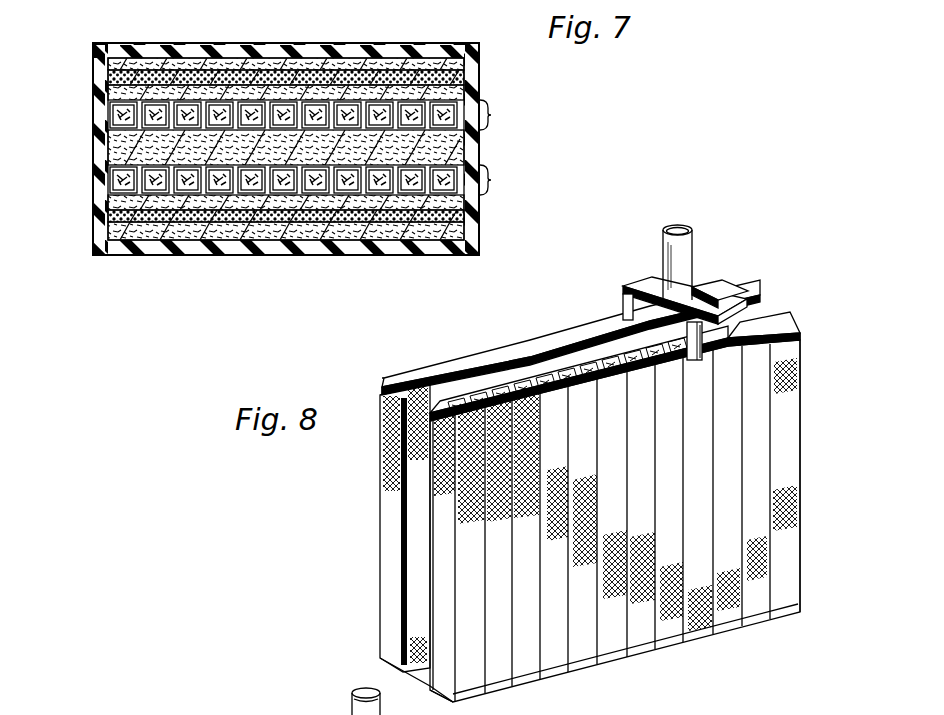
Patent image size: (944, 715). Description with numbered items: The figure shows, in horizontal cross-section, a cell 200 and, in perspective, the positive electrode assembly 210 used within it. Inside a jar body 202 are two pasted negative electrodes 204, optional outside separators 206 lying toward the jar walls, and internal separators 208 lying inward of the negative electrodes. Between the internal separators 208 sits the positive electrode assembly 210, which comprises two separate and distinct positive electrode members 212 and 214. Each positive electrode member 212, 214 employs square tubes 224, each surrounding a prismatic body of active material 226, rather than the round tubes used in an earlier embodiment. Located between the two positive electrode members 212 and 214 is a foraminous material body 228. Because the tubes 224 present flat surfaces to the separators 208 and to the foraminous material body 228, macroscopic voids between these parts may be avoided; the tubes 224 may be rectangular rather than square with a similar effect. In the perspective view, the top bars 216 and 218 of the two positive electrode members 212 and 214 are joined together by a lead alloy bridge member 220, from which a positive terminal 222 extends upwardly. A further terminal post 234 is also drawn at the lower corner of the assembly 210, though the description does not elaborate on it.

In FIG. 7, the cell 200 is at (517, 89).
In FIG. 7, the jar body 202 is at (414, 250).
In FIG. 7, the pasted negative electrodes 204 is at (109, 75).
In FIG. 7, the outside separators 206 is at (155, 62).
In FIG. 7, the internal separators 208 is at (108, 92).
In FIG. 7, the positive electrode member 212 is at (491, 113).
In FIG. 8, the positive electrode member 212 is at (380, 547).
In FIG. 7, the positive electrode member 214 is at (491, 177).
In FIG. 8, the positive electrode member 214 is at (424, 683).
In FIG. 7, the square tubes 224 is at (250, 108).
In FIG. 8, the square tubes 224 is at (394, 513).
In FIG. 7, the prismatic bodies of active material 226 is at (460, 227).
In FIG. 7, the foraminous material body 228 is at (108, 148).
In FIG. 8, the positive electrode assembly 210 is at (808, 361).
In FIG. 8, the top bar 216 is at (470, 363).
In FIG. 8, the top bar 218 is at (770, 322).
In FIG. 8, the lead alloy bridge member 220 is at (642, 286).
In FIG. 8, the positive terminal 222 is at (688, 241).
In FIG. 8, the second terminal post 234 is at (328, 714).